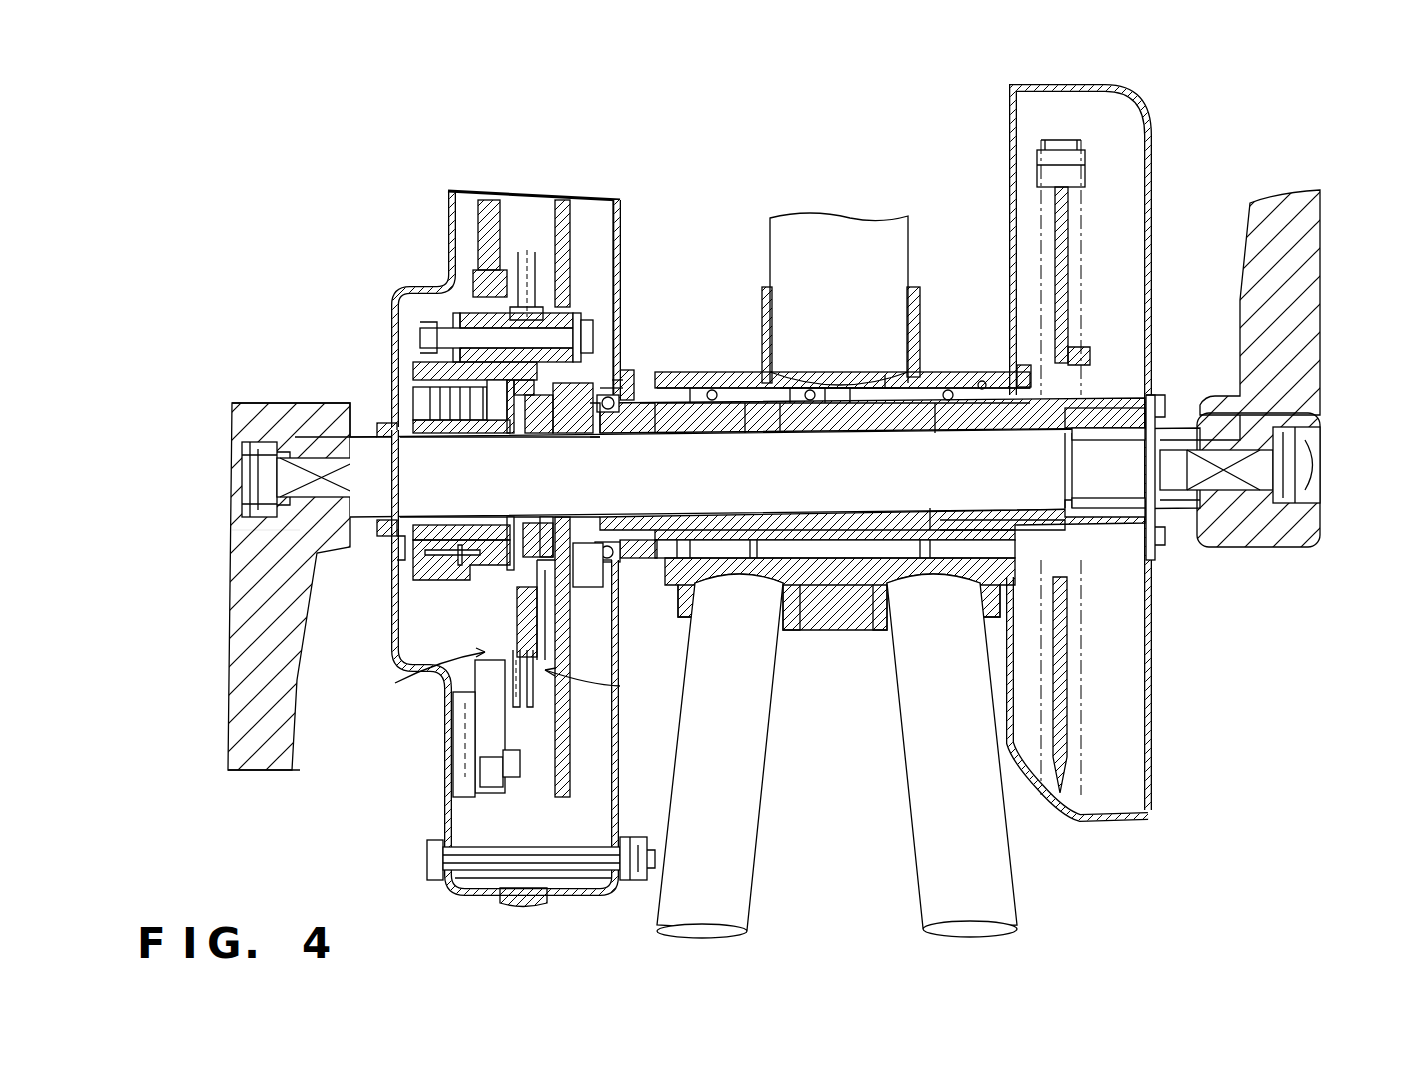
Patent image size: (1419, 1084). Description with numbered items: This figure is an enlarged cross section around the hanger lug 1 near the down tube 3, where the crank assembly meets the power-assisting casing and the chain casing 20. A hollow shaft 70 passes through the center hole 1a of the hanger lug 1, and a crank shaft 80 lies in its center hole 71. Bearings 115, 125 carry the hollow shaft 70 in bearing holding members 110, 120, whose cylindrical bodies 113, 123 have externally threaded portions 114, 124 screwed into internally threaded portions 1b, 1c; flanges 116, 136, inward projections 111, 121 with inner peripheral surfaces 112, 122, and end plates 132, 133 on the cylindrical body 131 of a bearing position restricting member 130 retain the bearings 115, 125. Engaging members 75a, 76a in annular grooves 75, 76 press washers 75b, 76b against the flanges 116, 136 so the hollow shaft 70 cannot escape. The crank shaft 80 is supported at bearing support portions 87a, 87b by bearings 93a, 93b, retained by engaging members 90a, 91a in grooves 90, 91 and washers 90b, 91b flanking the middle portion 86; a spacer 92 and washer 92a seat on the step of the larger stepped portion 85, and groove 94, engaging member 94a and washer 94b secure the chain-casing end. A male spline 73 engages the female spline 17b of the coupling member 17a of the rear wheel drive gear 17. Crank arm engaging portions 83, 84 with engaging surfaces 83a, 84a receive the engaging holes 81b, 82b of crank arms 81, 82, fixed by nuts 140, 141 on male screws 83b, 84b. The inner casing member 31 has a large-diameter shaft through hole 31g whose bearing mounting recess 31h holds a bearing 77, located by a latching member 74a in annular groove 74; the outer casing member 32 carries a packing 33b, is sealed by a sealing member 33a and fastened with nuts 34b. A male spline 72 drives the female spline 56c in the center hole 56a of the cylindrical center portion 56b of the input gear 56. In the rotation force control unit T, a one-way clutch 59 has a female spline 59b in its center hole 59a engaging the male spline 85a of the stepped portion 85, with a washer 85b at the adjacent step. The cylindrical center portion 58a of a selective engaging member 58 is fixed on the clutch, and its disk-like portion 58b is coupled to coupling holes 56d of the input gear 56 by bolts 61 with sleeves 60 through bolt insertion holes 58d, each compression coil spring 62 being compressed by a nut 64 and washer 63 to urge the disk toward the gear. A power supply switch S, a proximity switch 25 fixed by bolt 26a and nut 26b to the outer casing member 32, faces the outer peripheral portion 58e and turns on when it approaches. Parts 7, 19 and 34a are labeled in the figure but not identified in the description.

The rotor 1 is at (922, 372).
The rotor boss 1a is at (800, 386).
The rotor flange 1b is at (762, 375).
The rotor flange 1c is at (920, 375).
The motor 3 is at (765, 258).
The spoke 7 is at (765, 745).
The brake rod 17 is at (1068, 228).
The brake rod end 17a is at (1130, 585).
The brake rod end 17b is at (1070, 600).
The bolt 19 is at (1070, 148).
The cover 20 is at (1150, 122).
The bracket 25 is at (480, 682).
The bracket plate 26a is at (455, 760).
The bolt 26b is at (512, 788).
The case 31 is at (620, 800).
The case flange 31g is at (630, 567).
The case wall 31h is at (625, 575).
The lid 32 is at (443, 812).
The boss 33a is at (505, 905).
The boss 33b is at (385, 435).
The bolt head 34a is at (425, 855).
The nut 34b is at (632, 882).
The controller housing 56 is at (565, 300).
The housing wall 56a is at (615, 392).
The housing wall 56b is at (613, 370).
The housing boss 56c is at (515, 440).
The housing wall 56d is at (585, 320).
The motor case 58 is at (460, 592).
The case boss 58a is at (445, 575).
The case wall 58b is at (520, 622).
The case wall 58d is at (450, 270).
The pin 58e is at (538, 695).
The bearing holder 59 is at (400, 630).
The holder face 59a is at (500, 475).
The holder face 59b is at (472, 436).
The bolt 60 is at (475, 290).
The washer 61 is at (588, 318).
The pin 62 is at (465, 310).
The washer 63 is at (455, 325).
The bolt 64 is at (425, 335).
The hub 70 is at (853, 432).
The hub body 71 is at (887, 520).
The bearing 72 is at (547, 522).
The bracket 73 is at (1092, 365).
The bearing 74 is at (640, 545).
The bearing ball 74a is at (608, 545).
The bearing 75 is at (655, 560).
The bearing race 75a is at (660, 435).
The bearing race 75b is at (752, 445).
The bearing 76 is at (1070, 415).
The bearing race 76a is at (1075, 505).
The bearing race 76b is at (1040, 428).
The wall 77 is at (596, 560).
The flange 80 is at (875, 563).
The fork leg 81 is at (240, 612).
The fork end 81b is at (240, 537).
The fork leg 82 is at (1252, 240).
The fork end 82b is at (1222, 396).
The axle holder 83 is at (280, 430).
The axle bolt 83a is at (318, 455).
The bolt head 83b is at (243, 470).
The axle holder 84 is at (1260, 540).
The axle bolt 84a is at (1230, 495).
The bolt head 84b is at (1322, 470).
The bracket 85 is at (395, 540).
The bracket 85a is at (400, 560).
The bracket 85b is at (390, 425).
The flange 86 is at (835, 565).
The spacer 87a is at (520, 510).
The spacer 87b is at (1160, 535).
The bearing 90 is at (592, 478).
The bearing race 90a is at (600, 443).
The bearing race 90b is at (562, 441).
The axle 91 is at (1085, 475).
The axle shoulder 91a is at (1030, 520).
The axle shoulder 91b is at (1095, 488).
The coil 92 is at (450, 418).
The coil holder 92a is at (500, 428).
The bearing 93a is at (600, 413).
The bearing 93b is at (1100, 460).
The spacer 94 is at (1158, 490).
The spacer 94a is at (1170, 440).
The spacer 94b is at (1165, 400).
The one-way clutch 110 is at (712, 390).
The clutch inner 111 is at (690, 400).
The spoke flange 112 is at (707, 601).
The bearing 113 is at (783, 432).
The bearing 114 is at (815, 405).
The spoke flange 115 is at (768, 568).
The seal 116 is at (632, 380).
The one-way clutch 120 is at (982, 382).
The spoke flange 121 is at (990, 568).
The bearing 122 is at (960, 525).
The bearing 123 is at (930, 428).
The bearing 124 is at (960, 405).
The spoke flange 125 is at (895, 568).
The gear 130 is at (848, 400).
The gear 131 is at (825, 402).
The gear 132 is at (790, 402).
The gear 133 is at (870, 390).
The seal 136 is at (1022, 365).
The washer 140 is at (240, 485).
The washer 141 is at (1322, 434).
The gap S is at (427, 673).
The gap T is at (592, 683).